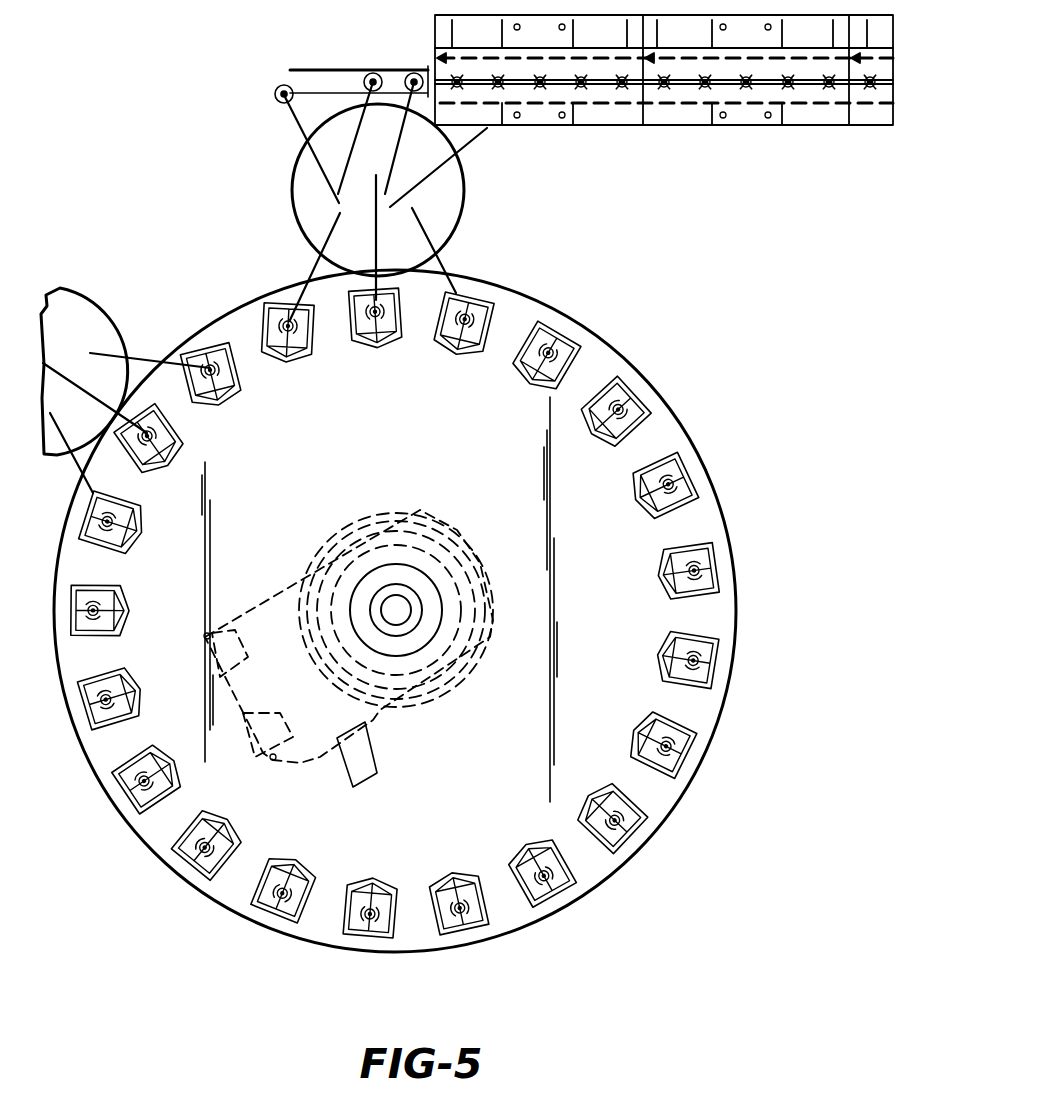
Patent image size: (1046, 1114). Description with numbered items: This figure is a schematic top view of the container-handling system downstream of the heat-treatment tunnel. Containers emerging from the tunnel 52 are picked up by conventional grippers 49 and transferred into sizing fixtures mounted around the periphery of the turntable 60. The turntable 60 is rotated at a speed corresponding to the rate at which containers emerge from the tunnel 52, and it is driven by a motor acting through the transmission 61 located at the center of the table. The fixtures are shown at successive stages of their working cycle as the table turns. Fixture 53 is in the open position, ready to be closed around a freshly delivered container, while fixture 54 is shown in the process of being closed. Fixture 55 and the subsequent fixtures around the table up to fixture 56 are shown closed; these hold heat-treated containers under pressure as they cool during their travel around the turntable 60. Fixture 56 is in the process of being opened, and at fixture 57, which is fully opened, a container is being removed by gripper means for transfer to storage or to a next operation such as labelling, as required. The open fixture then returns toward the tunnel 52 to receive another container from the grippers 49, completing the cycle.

The grippers 49 is at (463, 147).
The tunnel 52 is at (610, 115).
The fixture 53 is at (310, 357).
The fixture 54 is at (377, 345).
The fixture 55 is at (462, 348).
The fixture 56 is at (187, 442).
The fixture 57 is at (240, 393).
The turntable 60 is at (628, 540).
The transmission 61 is at (377, 740).